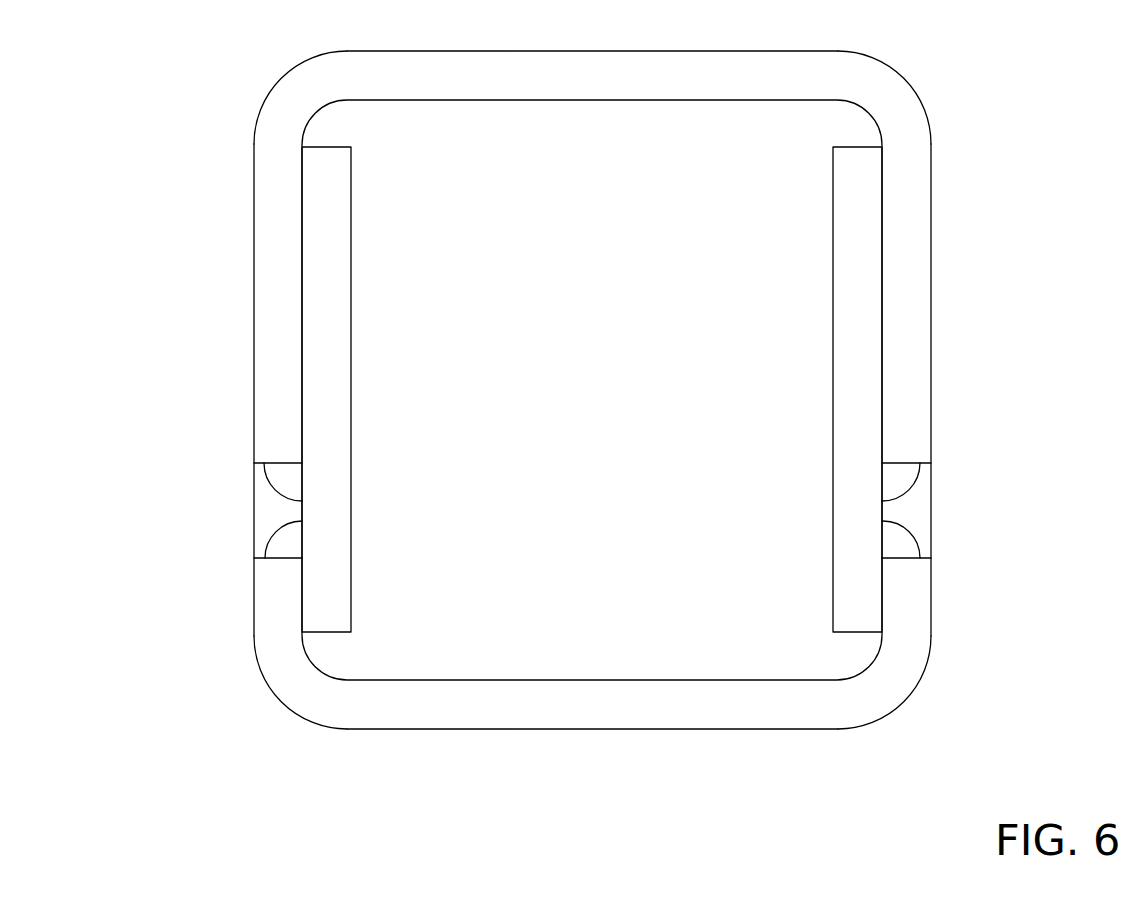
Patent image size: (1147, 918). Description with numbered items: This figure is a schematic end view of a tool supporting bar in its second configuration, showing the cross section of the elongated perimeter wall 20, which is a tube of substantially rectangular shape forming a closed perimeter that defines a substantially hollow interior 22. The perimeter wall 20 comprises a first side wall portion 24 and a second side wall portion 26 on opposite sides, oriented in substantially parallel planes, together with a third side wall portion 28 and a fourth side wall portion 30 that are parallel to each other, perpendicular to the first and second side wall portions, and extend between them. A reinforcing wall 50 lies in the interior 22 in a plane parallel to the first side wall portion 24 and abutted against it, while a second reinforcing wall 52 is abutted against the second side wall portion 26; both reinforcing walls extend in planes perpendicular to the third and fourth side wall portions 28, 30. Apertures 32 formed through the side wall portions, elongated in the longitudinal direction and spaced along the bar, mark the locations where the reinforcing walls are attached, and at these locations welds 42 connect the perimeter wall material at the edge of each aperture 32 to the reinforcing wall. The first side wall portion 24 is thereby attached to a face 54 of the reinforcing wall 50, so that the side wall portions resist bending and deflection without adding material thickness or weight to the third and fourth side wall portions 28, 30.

The perimeter wall 20 is at (903, 232).
The interior 22 is at (745, 155).
The first side wall portion 24 is at (282, 334).
The second side wall portion 26 is at (909, 333).
The third side wall portion 28 is at (674, 78).
The fourth side wall portion 30 is at (558, 707).
The apertures 32 is at (268, 513).
The welds 42 is at (288, 548).
The reinforcing wall 50 is at (327, 273).
The second reinforcing wall 52 is at (847, 418).
The face 54 is at (302, 512).